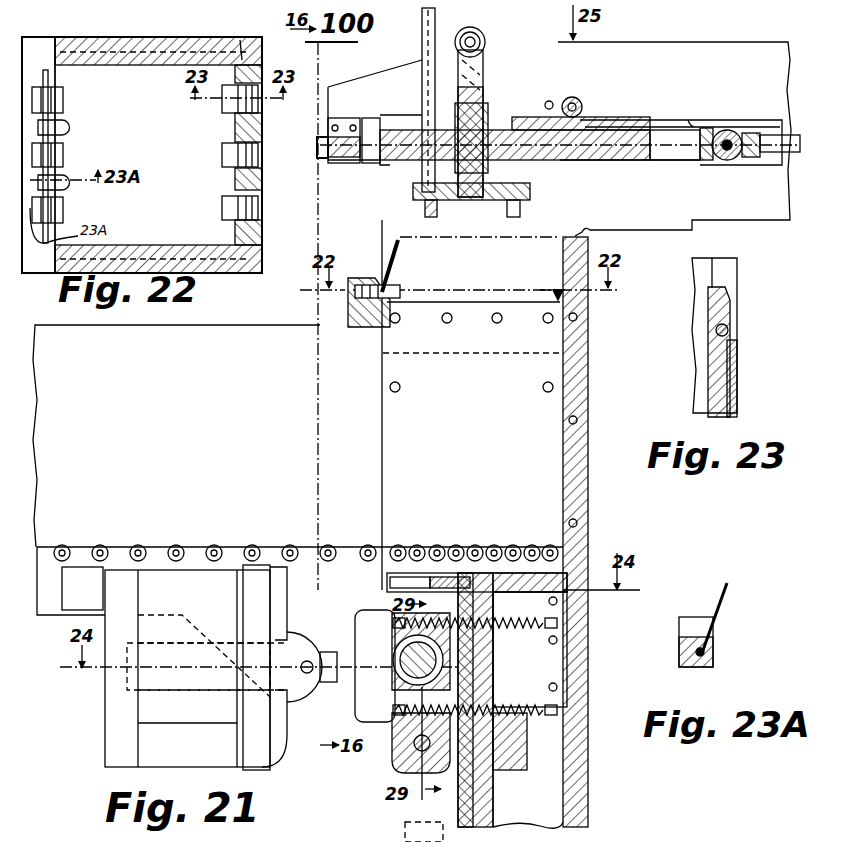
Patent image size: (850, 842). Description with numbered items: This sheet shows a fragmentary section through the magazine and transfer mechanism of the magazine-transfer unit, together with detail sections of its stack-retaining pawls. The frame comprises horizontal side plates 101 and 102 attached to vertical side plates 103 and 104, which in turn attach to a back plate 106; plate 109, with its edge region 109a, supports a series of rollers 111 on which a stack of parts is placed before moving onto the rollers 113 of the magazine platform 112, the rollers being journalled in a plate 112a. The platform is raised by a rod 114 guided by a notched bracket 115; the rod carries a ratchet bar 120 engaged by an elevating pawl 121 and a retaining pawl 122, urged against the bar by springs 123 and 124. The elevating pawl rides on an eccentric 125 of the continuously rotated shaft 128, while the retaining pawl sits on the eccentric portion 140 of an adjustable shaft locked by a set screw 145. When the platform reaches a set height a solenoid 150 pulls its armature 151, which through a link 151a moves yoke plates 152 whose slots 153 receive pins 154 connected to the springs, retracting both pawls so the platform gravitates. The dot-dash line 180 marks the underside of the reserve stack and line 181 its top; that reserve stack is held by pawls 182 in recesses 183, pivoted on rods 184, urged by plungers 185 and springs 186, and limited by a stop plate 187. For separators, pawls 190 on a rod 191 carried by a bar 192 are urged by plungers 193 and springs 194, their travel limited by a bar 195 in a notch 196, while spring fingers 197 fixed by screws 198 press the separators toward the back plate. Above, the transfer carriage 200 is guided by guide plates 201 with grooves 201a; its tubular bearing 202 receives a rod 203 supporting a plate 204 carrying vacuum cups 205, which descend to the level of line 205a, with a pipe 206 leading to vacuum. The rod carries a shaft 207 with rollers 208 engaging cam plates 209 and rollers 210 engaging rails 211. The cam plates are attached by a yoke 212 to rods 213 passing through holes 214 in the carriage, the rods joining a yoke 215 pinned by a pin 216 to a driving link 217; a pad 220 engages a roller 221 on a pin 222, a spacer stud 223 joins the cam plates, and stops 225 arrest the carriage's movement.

In FIG. 22, the horizontally extending side plate 101 is at (155, 37).
In FIG. 21, the horizontally extending side plate 101 is at (772, 220).
In FIG. 22, the horizontally extending side plate 102 is at (258, 262).
In FIG. 22, the vertically extending side plate 103 is at (241, 45).
In FIG. 22, the vertically extending side plate 104 is at (240, 262).
In FIG. 22, the back plate 106 is at (258, 72).
In FIG. 21, the back plate 106 is at (588, 418).
In FIG. 21, the plate 109 is at (82, 548).
In FIG. 21, the plate edge 109a is at (312, 327).
In FIG. 21, the rollers 111 is at (190, 548).
In FIG. 21, the magazine platform 112 is at (543, 578).
In FIG. 21, the plate 112a is at (522, 545).
In FIG. 21, the rollers 113 is at (465, 545).
In FIG. 21, the rod 114 is at (490, 674).
In FIG. 21, the bracket 115 is at (520, 770).
In FIG. 21, the ratchet bar 120 is at (478, 657).
In FIG. 21, the elevating pawl 121 is at (395, 683).
In FIG. 21, the retaining pawl 122 is at (400, 765).
In FIG. 21, the spring 123 is at (530, 622).
In FIG. 21, the spring 124 is at (548, 712).
In FIG. 21, the eccentric 125 is at (393, 659).
In FIG. 21, the shaft 128 is at (475, 658).
In FIG. 21, the eccentric portion 140 is at (442, 776).
In FIG. 21, the set screw 145 is at (387, 777).
In FIG. 21, the electromagnet or solenoid 150 is at (105, 742).
In FIG. 21, the armature 151 is at (292, 636).
In FIG. 21, the link 151a is at (305, 747).
In FIG. 21, the yoke plates 152 is at (338, 706).
In FIG. 21, the slots 153 is at (372, 612).
In FIG. 21, the pin 154 is at (372, 621).
In FIG. 21, the dot-dash line 180 is at (478, 283).
In FIG. 23, the dot-dash line 180 is at (710, 318).
In FIG. 21, the line 181 is at (468, 244).
In FIG. 22, the pawls 182 is at (222, 106).
In FIG. 21, the pawls 182 is at (553, 294).
In FIG. 23, the pawls 182 is at (708, 300).
In FIG. 23, the recesses 183 is at (737, 292).
In FIG. 23, the rod 184 is at (728, 328).
In FIG. 23, the plunger 185 is at (734, 348).
In FIG. 23, the spring 186 is at (734, 380).
In FIG. 23, the stop plate 187 is at (712, 347).
In FIG. 22, the pawls 190 is at (63, 104).
In FIG. 21, the pawls 190 is at (385, 285).
In FIG. 21, the rod 191 is at (378, 328).
In FIG. 22, the bar 192 is at (35, 38).
In FIG. 21, the bar 192 is at (370, 328).
In FIG. 23A, the bar 192 is at (695, 617).
In FIG. 21, the plungers 193 is at (360, 325).
In FIG. 21, the springs 194 is at (348, 320).
In FIG. 22, the bar 195 is at (48, 70).
In FIG. 21, the bar 195 is at (375, 288).
In FIG. 21, the notch 196 is at (400, 318).
In FIG. 22, the spring fingers 197 is at (70, 127).
In FIG. 21, the spring fingers 197 is at (398, 240).
In FIG. 23A, the spring fingers 197 is at (727, 592).
In FIG. 23A, the screws 198 is at (705, 652).
In FIG. 21, the plate or carriage 200 is at (630, 152).
In FIG. 21, the guide plates 201 is at (676, 120).
In FIG. 21, the grooves 201a is at (690, 124).
In FIG. 21, the tubular bearing 202 is at (488, 108).
In FIG. 21, the rod 203 is at (478, 78).
In FIG. 21, the plate 204 is at (530, 188).
In FIG. 21, the vacuum cups 205 is at (505, 210).
In FIG. 21, the line 205a is at (528, 258).
In FIG. 21, the pipe 206 is at (422, 38).
In FIG. 21, the shaft 207 is at (472, 52).
In FIG. 21, the rollers 208 is at (478, 30).
In FIG. 21, the cam plates 209 is at (338, 44).
In FIG. 21, the rollers 210 is at (485, 40).
In FIG. 21, the rails 211 is at (662, 42).
In FIG. 21, the yoke 212 is at (342, 125).
In FIG. 21, the rods 213 is at (372, 118).
In FIG. 21, the holes 214 is at (585, 162).
In FIG. 21, the yoke 215 is at (705, 161).
In FIG. 21, the pin 216 is at (732, 161).
In FIG. 21, the link 217 is at (773, 143).
In FIG. 21, the pad 220 is at (585, 118).
In FIG. 21, the roller 221 is at (578, 103).
In FIG. 21, the pin 222 is at (576, 98).
In FIG. 21, the spacer stud 223 is at (551, 100).
In FIG. 21, the stops 225 is at (376, 165).